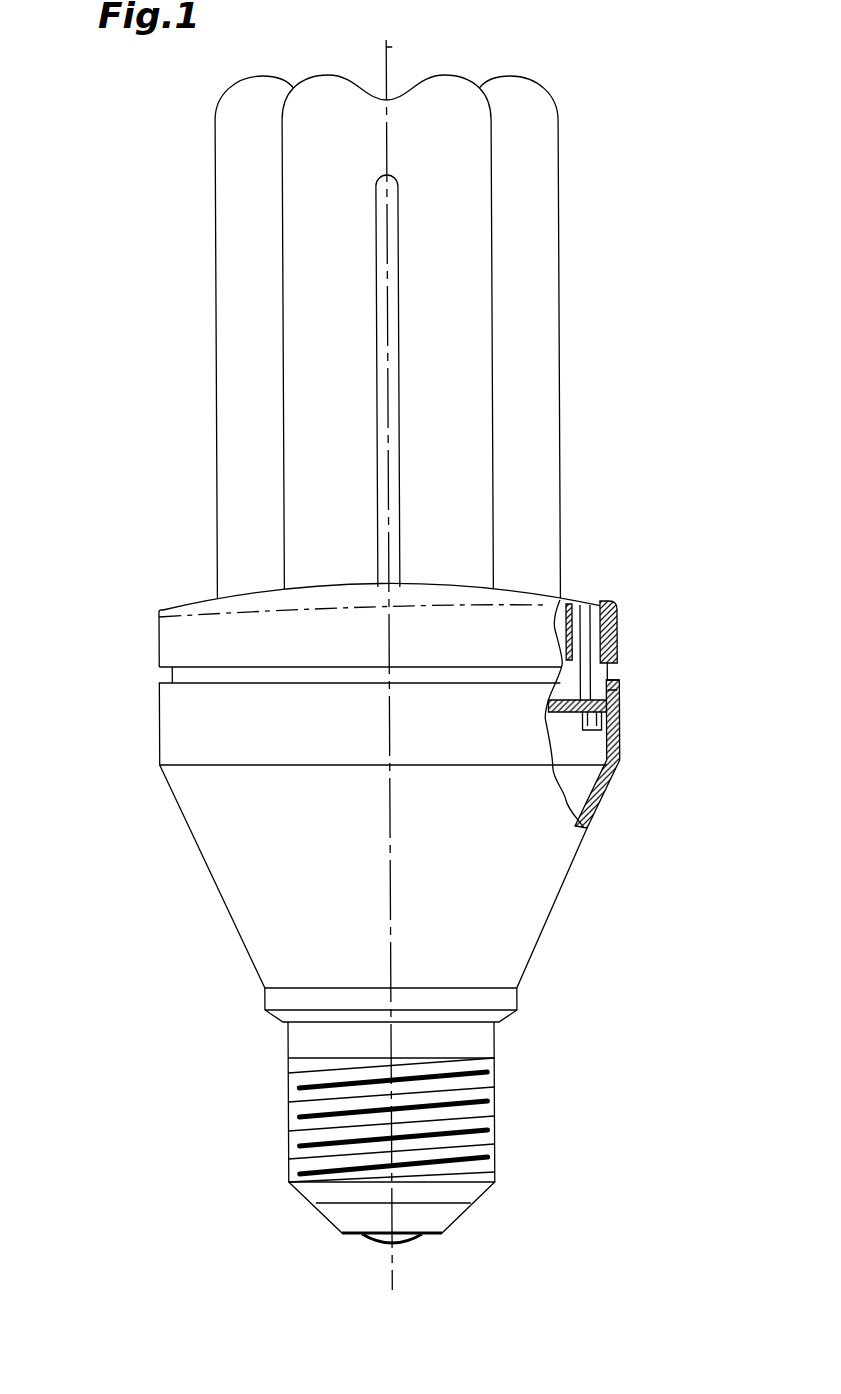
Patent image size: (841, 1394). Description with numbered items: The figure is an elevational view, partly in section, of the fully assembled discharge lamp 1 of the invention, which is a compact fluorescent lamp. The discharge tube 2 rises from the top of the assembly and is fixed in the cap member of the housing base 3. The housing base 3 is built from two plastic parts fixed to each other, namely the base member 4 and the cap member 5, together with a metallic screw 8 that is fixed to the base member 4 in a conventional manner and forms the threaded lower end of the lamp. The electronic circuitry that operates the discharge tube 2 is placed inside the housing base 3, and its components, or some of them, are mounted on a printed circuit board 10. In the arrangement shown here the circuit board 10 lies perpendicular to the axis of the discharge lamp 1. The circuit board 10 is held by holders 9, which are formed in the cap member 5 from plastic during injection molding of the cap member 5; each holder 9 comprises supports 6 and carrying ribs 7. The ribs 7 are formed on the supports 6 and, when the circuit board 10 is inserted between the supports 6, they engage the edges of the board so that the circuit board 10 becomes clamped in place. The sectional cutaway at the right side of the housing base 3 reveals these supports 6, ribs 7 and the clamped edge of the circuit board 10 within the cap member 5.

The discharge lamp 1 is at (644, 66).
The discharge tube 2 is at (557, 278).
The housing base 3 is at (142, 887).
The base member 4 is at (174, 800).
The cap member 5 is at (157, 632).
The supports 6 is at (617, 716).
The carrying ribs 7 is at (595, 727).
The metallic screw 8 is at (284, 1103).
The holder 9 is at (587, 637).
The printed circuit board 10 is at (617, 688).